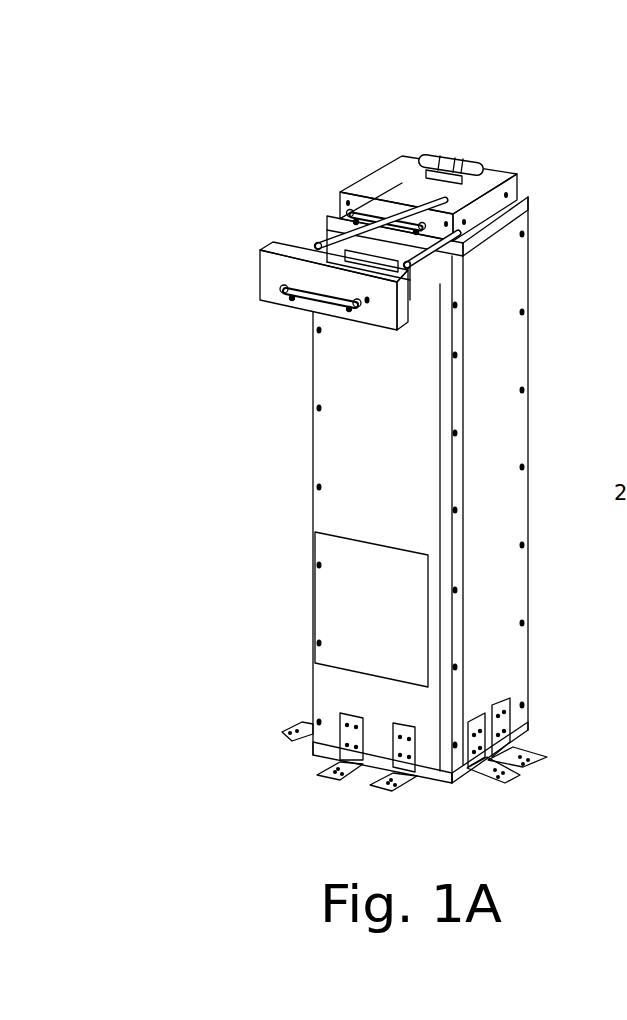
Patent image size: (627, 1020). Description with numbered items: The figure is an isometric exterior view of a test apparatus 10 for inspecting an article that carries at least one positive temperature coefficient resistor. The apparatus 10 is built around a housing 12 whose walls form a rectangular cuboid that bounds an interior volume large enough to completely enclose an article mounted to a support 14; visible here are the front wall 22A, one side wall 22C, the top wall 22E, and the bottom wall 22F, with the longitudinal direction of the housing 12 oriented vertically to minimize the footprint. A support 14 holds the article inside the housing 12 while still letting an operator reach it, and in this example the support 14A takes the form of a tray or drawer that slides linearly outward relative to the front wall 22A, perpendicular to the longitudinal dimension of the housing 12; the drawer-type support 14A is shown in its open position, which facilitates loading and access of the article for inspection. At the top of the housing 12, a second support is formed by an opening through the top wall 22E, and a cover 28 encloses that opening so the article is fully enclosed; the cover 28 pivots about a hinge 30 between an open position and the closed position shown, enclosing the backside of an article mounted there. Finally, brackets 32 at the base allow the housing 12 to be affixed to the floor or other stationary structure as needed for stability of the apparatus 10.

The apparatus 10 is at (395, 401).
The housing 12 is at (550, 248).
The support 14 is at (252, 238).
The support 14A is at (320, 246).
The front wall 22A is at (340, 454).
The side wall 22C is at (508, 424).
The top wall 22E is at (530, 205).
The bottom wall 22F is at (532, 728).
The cover 28 is at (398, 183).
The hinge 30 is at (448, 152).
The brackets 32 is at (317, 772).